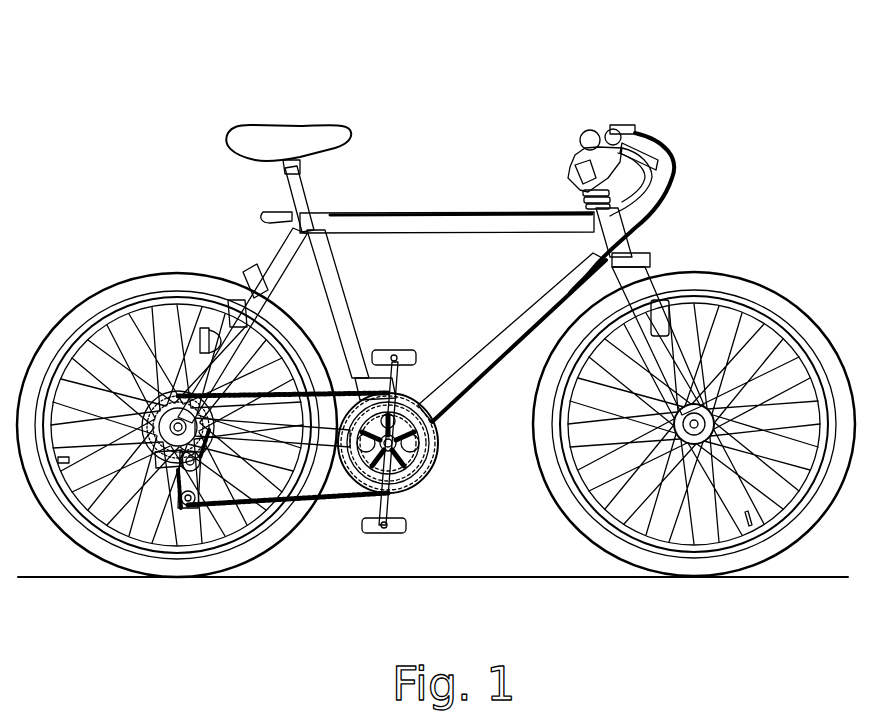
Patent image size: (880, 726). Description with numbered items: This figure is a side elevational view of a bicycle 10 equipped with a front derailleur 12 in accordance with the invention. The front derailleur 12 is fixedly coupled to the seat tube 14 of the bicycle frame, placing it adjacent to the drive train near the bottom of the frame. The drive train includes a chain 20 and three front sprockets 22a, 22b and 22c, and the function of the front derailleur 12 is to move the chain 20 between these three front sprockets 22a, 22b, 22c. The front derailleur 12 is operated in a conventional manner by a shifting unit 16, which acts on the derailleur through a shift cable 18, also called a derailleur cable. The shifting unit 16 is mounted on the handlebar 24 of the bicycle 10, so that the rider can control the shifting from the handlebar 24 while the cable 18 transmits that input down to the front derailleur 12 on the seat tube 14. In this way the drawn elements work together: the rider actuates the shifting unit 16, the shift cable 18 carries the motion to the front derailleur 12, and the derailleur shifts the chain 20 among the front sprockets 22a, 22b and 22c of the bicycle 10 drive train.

The bicycle 10 is at (702, 195).
The front derailleur 12 is at (377, 383).
The seat tube 14 is at (340, 271).
The shifting unit 16 is at (622, 125).
The shift cable 18 is at (415, 211).
The chain 20 is at (330, 500).
The front sprocket 22a is at (440, 422).
The front sprocket 22b is at (436, 445).
The front sprocket 22c is at (432, 460).
The handlebar 24 is at (588, 154).